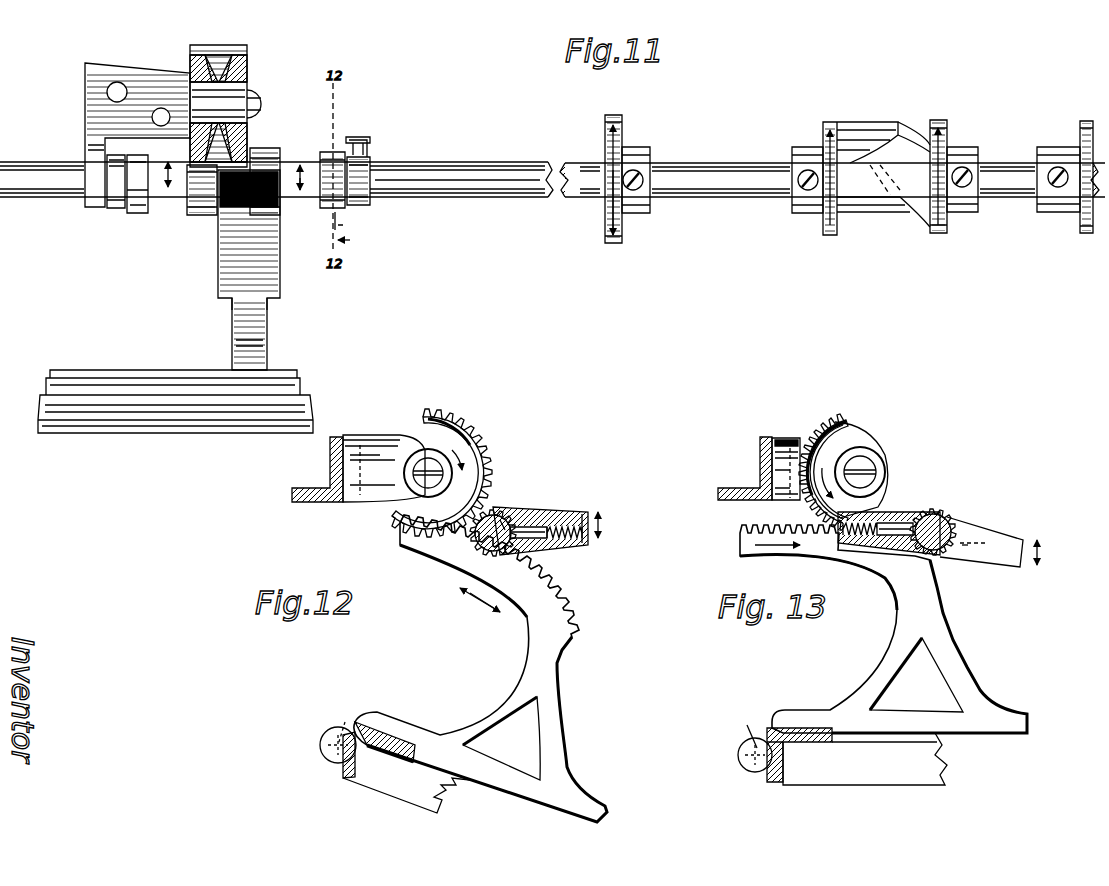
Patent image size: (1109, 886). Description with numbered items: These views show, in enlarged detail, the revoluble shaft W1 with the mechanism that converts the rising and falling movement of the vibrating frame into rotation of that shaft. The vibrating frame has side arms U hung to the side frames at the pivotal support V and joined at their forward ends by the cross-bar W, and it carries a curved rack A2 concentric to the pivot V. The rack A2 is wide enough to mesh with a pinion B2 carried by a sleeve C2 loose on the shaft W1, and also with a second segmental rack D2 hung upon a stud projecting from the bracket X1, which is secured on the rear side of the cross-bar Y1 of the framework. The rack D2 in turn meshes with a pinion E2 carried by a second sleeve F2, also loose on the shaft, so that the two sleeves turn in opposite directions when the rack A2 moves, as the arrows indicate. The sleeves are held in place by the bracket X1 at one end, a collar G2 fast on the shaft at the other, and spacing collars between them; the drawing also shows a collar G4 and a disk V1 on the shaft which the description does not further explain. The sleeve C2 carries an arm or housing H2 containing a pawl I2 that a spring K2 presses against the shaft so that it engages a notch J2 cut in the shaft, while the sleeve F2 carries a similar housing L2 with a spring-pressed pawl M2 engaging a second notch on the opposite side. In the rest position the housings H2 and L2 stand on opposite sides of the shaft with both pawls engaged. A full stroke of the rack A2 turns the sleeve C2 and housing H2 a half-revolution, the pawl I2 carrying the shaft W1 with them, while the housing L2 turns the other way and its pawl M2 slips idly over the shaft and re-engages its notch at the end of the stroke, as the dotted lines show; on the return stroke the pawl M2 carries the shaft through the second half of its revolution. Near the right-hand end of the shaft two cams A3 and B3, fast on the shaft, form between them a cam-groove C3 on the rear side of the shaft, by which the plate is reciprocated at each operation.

In FIG. 11, the revoluble shaft W1 is at (473, 175).
In FIG. 12, the revoluble shaft W1 is at (546, 508).
In FIG. 13, the revoluble shaft W1 is at (953, 517).
In FIG. 11, the bracket X1 is at (85, 127).
In FIG. 12, the bracket X1 is at (384, 468).
In FIG. 13, the bracket X1 is at (787, 437).
In FIG. 11, the collar G4 is at (84, 195).
In FIG. 11, the housing L2 is at (118, 172).
In FIG. 12, the housing L2 is at (462, 537).
In FIG. 13, the housing L2 is at (981, 545).
In FIG. 11, the second sleeve F2 is at (150, 190).
In FIG. 11, the pinion E2 is at (200, 208).
In FIG. 11, the segmental rack D2 is at (215, 45).
In FIG. 12, the segmental rack D2 is at (483, 450).
In FIG. 13, the segmental rack D2 is at (834, 452).
In FIG. 11, the pinion B2 is at (267, 148).
In FIG. 12, the pinion B2 is at (498, 507).
In FIG. 13, the pinion B2 is at (935, 507).
In FIG. 11, the curved rack A2 is at (220, 272).
In FIG. 12, the curved rack A2 is at (455, 558).
In FIG. 13, the curved rack A2 is at (823, 543).
In FIG. 11, the cross-bar W is at (152, 388).
In FIG. 12, the cross-bar W is at (336, 743).
In FIG. 13, the cross-bar W is at (760, 750).
In FIG. 11, the sleeve C2 is at (302, 167).
In FIG. 11, the arm or housing H2 is at (330, 214).
In FIG. 12, the arm or housing H2 is at (548, 520).
In FIG. 13, the arm or housing H2 is at (883, 512).
In FIG. 11, the collar G2 is at (360, 170).
In FIG. 11, the disc V1 is at (590, 200).
In FIG. 11, the cam B3 is at (826, 122).
In FIG. 11, the cam-groove C3 is at (898, 140).
In FIG. 11, the cam A3 is at (948, 130).
In FIG. 12, the cross-bar of the framework Y1 is at (327, 500).
In FIG. 13, the cross-bar of the framework Y1 is at (742, 488).
In FIG. 12, the notch J2 is at (527, 548).
In FIG. 12, the pawl I2 is at (550, 538).
In FIG. 13, the pawl I2 is at (905, 540).
In FIG. 12, the spring K2 is at (586, 546).
In FIG. 12, the pivotal support V is at (347, 720).
In FIG. 13, the pivotal support V is at (760, 706).
In FIG. 12, the side arms U is at (406, 767).
In FIG. 13, the side arms U is at (857, 756).
In FIG. 13, the spring-pressed pawl M2 is at (965, 548).